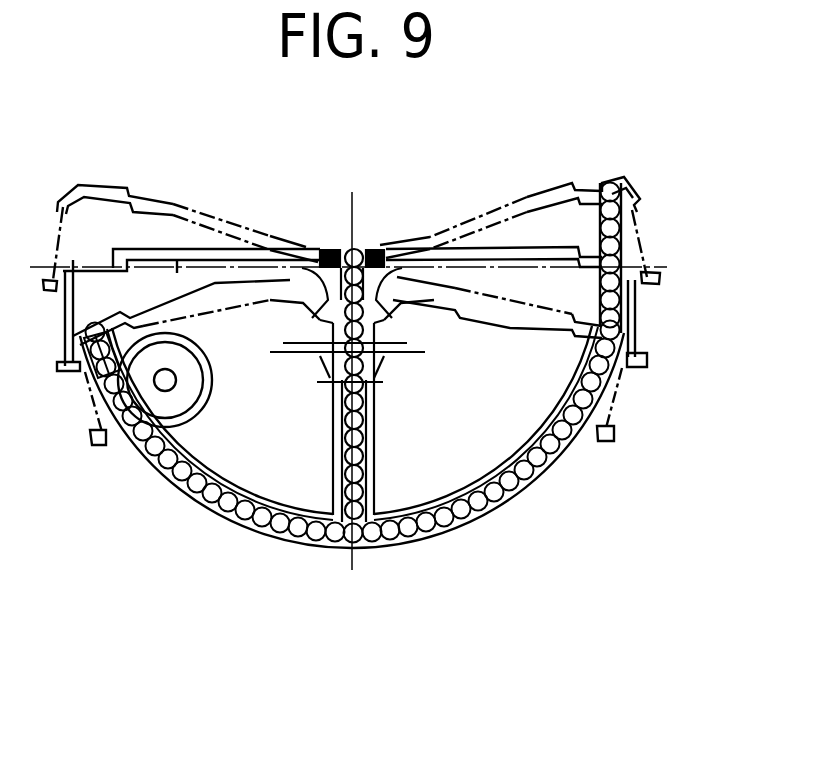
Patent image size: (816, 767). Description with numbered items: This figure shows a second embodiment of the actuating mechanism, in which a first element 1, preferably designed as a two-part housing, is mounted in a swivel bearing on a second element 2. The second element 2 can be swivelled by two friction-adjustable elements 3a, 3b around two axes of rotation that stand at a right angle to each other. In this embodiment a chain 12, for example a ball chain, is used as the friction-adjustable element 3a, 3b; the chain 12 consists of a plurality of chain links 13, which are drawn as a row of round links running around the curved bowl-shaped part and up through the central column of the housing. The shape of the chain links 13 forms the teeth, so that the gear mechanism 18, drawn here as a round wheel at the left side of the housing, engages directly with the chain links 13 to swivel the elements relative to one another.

The first element 1 is at (574, 440).
The second element 2 is at (445, 215).
The friction-adjustable element 3a is at (353, 459).
The friction-adjustable element 3b is at (292, 546).
The chain 12 is at (482, 517).
The chain link 13 is at (360, 550).
The gear mechanism 18 is at (167, 410).